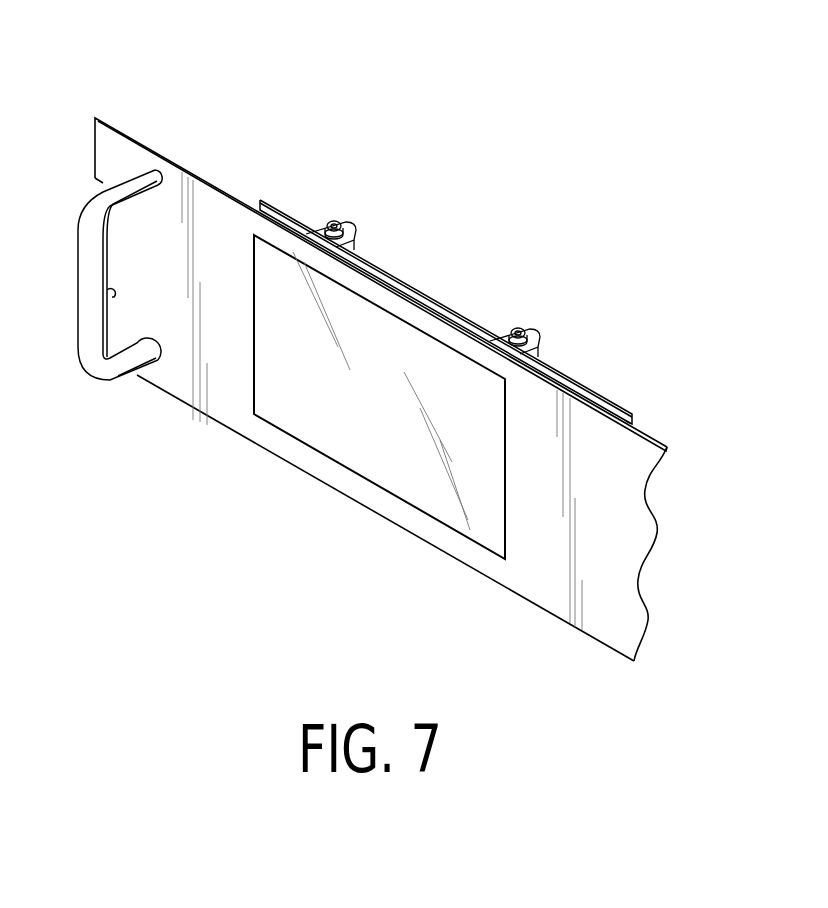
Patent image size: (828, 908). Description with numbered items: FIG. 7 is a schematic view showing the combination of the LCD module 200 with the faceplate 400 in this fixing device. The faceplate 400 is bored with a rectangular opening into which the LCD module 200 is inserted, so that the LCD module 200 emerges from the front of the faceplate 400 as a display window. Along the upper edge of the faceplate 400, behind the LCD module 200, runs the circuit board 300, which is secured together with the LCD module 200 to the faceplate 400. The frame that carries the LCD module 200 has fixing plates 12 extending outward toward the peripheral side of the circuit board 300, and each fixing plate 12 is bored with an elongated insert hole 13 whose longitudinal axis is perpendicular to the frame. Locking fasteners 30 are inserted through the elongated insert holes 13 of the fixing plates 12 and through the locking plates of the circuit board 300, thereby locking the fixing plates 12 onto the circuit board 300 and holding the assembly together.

The faceplate 400 is at (130, 132).
The circuit board 300 is at (578, 380).
The LCD module 200 is at (352, 476).
The locking fastener 30 is at (324, 221).
The elongated insert hole 13 is at (336, 222).
The fixing plate 12 is at (350, 232).